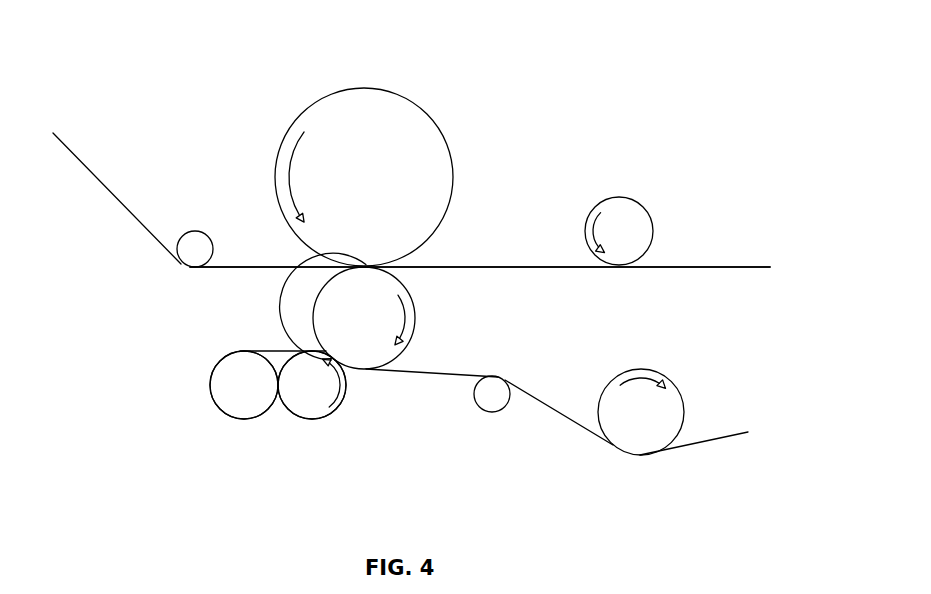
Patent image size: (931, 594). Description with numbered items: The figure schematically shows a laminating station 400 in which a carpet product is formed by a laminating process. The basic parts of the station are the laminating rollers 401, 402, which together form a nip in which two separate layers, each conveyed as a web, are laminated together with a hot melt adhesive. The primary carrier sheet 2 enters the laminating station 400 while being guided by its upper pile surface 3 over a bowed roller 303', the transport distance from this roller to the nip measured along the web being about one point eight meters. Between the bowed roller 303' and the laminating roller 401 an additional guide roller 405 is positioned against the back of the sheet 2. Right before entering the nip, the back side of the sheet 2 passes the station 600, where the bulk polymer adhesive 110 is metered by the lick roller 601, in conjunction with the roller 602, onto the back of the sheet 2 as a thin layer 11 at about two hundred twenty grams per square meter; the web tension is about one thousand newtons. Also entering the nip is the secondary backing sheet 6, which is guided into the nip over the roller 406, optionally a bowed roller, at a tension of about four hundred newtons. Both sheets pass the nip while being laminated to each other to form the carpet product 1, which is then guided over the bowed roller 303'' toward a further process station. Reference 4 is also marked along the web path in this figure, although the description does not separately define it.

The laminating station 400 is at (471, 41).
The carpet product 1 is at (728, 266).
The secondary backing sheet 6 is at (80, 162).
The roller 406 is at (203, 234).
The laminating roller 402 is at (449, 141).
The laminating roller 401 is at (416, 311).
The thin layer 11 is at (311, 309).
The bowed roller 303'' is at (655, 231).
The polymer adhesive 110 is at (278, 351).
The roller 602 is at (221, 411).
The lick roller 601 is at (339, 402).
The station 600 is at (280, 438).
The web path 4 is at (407, 395).
The guide roller 405 is at (485, 411).
The upper (pile) surface 3 is at (554, 383).
The bowed roller 303' is at (675, 412).
The primary carrier sheet 2 is at (722, 438).